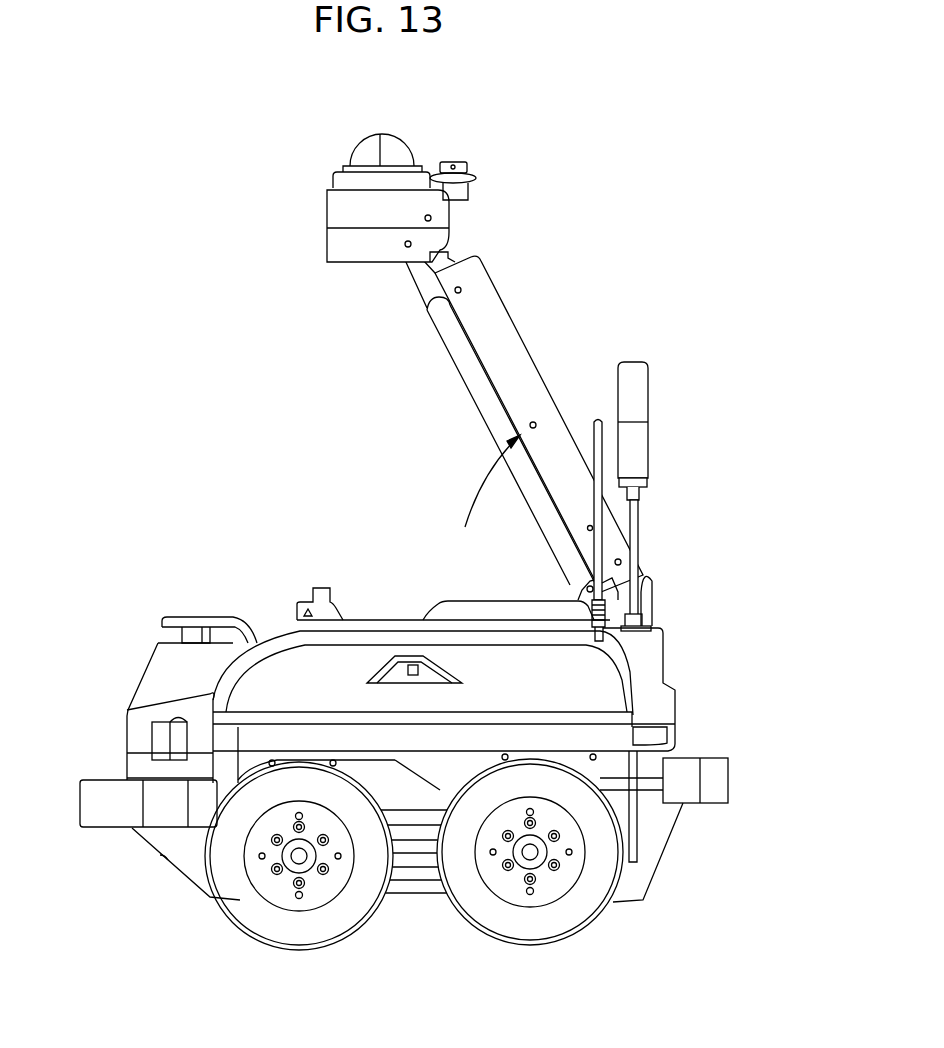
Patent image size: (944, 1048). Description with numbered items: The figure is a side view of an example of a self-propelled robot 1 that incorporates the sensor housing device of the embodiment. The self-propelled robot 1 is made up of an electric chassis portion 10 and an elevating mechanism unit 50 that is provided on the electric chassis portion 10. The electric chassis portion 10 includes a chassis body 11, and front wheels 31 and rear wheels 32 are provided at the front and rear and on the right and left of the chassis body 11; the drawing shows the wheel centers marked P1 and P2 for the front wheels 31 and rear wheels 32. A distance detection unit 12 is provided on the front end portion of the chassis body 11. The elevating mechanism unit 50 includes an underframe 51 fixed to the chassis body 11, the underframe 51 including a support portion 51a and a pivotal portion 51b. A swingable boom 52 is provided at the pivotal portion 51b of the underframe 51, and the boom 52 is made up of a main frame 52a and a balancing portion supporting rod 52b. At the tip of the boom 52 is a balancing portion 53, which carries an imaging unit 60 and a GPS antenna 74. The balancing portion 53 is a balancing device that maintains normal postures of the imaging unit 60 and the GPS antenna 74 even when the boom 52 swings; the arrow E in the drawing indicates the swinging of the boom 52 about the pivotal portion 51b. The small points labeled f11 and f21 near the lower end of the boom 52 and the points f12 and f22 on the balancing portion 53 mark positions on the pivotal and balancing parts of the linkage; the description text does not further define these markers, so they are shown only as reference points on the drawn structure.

The self-propelled robot 1 is at (172, 272).
The electric chassis portion 10 is at (126, 737).
The chassis body 11 is at (414, 890).
The distance detection unit 12 is at (190, 615).
The front wheels 31 is at (290, 948).
The rear wheels 32 is at (538, 946).
The elevating mechanism unit 50 is at (514, 325).
The underframe 51 is at (375, 612).
The support portion 51a is at (326, 590).
The pivotal portion 51b is at (648, 599).
The boom 52 is at (358, 446).
The main frame 52a is at (497, 384).
The balancing portion supporting rod 52b is at (452, 357).
The balancing portion 53 is at (327, 203).
The imaging unit 60 is at (348, 140).
The GPS antenna 74 is at (467, 163).
The marker point f11 is at (622, 561).
The marker point f12 is at (433, 218).
The marker point f21 is at (587, 587).
The marker point f22 is at (405, 248).
The wheel center P1 is at (297, 860).
The wheel center P2 is at (532, 855).
The arm swing direction E is at (489, 481).